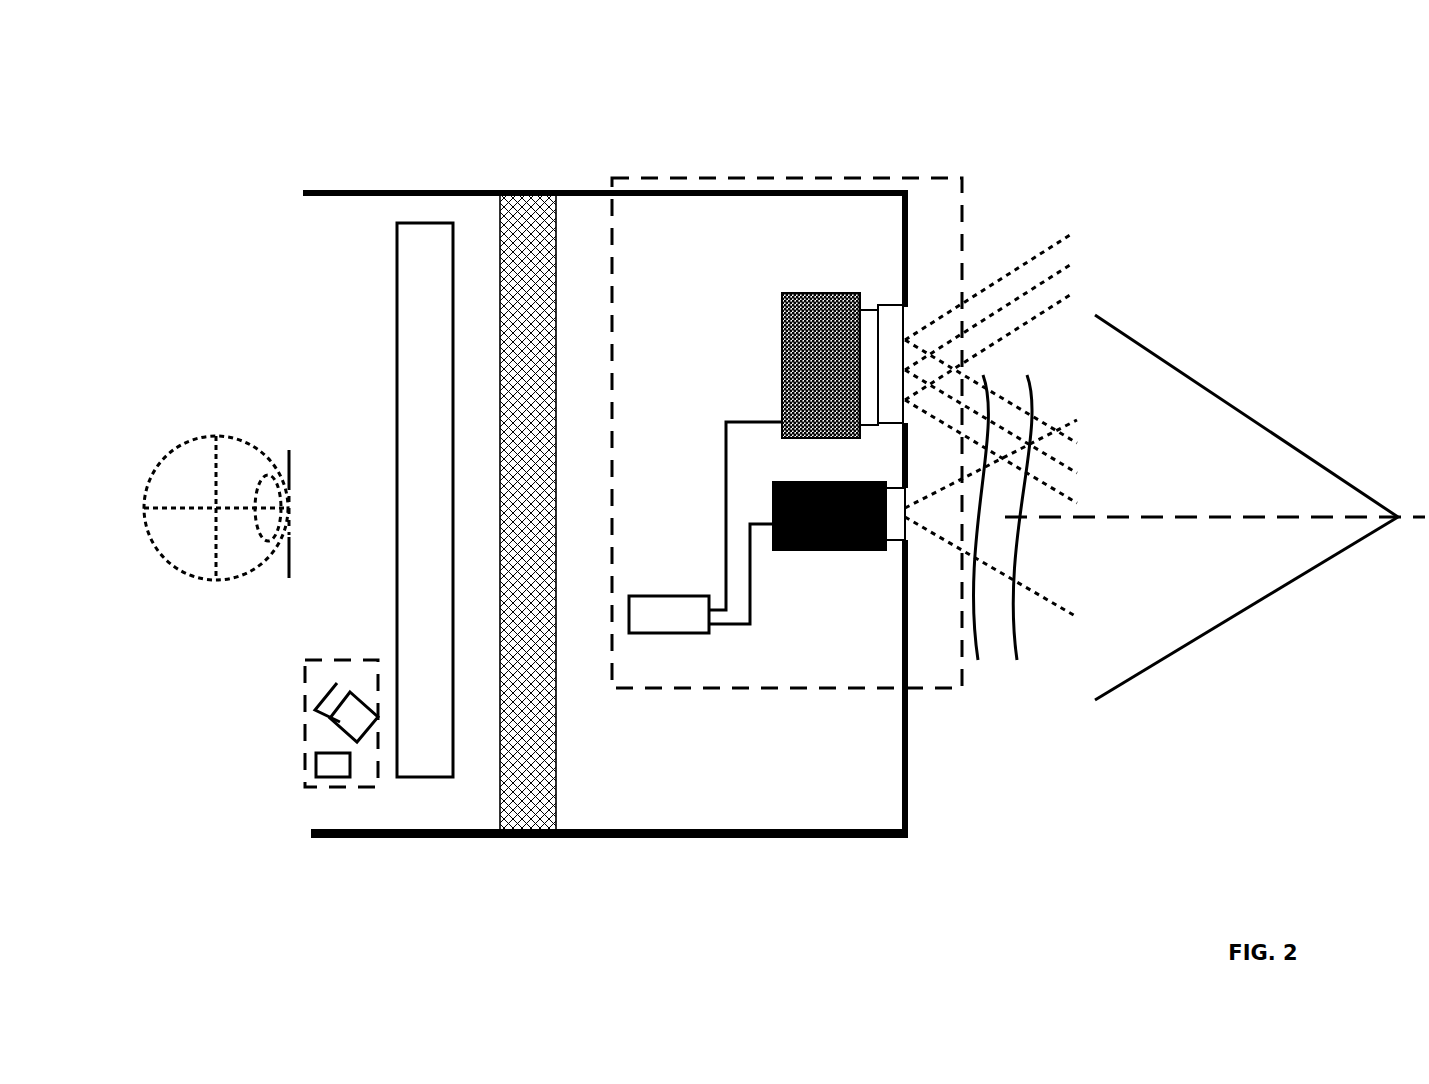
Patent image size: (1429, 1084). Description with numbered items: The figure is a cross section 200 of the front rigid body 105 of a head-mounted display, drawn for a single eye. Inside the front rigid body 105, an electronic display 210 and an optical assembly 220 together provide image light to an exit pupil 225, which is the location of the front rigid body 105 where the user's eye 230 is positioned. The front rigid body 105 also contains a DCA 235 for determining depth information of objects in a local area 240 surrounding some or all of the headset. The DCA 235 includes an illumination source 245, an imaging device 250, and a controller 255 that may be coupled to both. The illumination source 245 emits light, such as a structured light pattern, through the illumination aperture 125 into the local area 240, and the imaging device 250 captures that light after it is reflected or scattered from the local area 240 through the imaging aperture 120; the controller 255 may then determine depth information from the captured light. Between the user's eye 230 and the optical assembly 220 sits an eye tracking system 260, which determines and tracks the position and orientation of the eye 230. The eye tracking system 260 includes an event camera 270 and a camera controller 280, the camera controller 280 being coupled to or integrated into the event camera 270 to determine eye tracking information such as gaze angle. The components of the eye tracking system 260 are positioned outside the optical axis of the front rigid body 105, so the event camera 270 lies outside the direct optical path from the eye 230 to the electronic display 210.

The cross section 200 is at (1236, 82).
The front rigid body 105 is at (868, 832).
The electronic display 210 is at (500, 250).
The optical assembly 220 is at (400, 245).
The DCA 235 is at (645, 175).
The illumination source 245 is at (820, 295).
The illumination aperture 125 is at (905, 325).
The imaging device 250 is at (835, 550).
The imaging aperture 120 is at (907, 545).
The controller 255 is at (640, 633).
The eye tracking system 260 is at (371, 787).
The event camera 270 is at (342, 722).
The camera controller 280 is at (332, 763).
The exit pupil 225 is at (285, 448).
The eye 230 is at (178, 573).
The local area 240 is at (1200, 598).